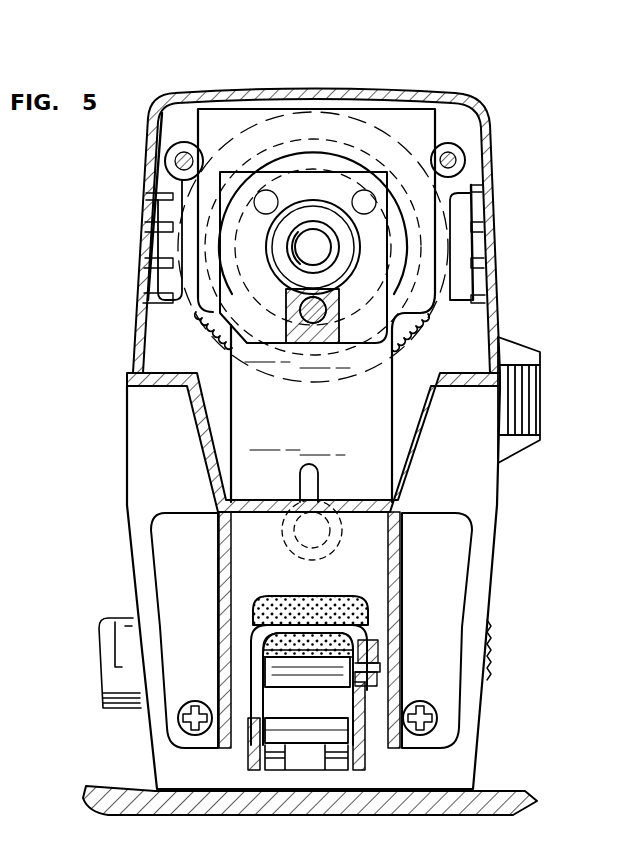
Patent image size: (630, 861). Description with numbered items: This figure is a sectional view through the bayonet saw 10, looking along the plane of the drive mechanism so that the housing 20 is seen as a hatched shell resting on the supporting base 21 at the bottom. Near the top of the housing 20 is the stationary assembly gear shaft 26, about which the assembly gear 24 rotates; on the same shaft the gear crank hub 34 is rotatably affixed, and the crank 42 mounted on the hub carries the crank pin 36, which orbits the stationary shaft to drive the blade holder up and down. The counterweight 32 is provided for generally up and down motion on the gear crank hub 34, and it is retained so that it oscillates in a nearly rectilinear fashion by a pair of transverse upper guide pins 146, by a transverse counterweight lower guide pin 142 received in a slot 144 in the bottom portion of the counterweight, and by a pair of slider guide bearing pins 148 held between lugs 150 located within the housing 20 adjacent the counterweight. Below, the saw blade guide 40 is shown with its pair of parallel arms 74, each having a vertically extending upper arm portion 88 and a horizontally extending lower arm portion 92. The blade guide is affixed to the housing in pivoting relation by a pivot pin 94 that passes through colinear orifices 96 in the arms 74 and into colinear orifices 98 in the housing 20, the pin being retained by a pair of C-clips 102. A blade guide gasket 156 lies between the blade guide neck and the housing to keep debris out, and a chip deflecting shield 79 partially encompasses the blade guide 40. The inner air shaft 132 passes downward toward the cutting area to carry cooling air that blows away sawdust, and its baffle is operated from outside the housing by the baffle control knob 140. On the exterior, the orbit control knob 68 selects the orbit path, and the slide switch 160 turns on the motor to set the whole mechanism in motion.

The bayonet saw 10 is at (122, 172).
The housing 20 is at (124, 412).
The supporting base 21 is at (525, 791).
The assembly gear 24 is at (422, 326).
The assembly gear shaft 26 is at (313, 247).
The counterweight 32 is at (383, 117).
The gear crank hub 34 is at (312, 164).
The crank pin 36 is at (300, 312).
The saw blade guide 40 is at (167, 746).
The crank 42 is at (330, 178).
The orbit control knob 68 is at (494, 656).
The parallel arms 74 is at (248, 640).
The chip deflecting shield 79 is at (219, 587).
The upper arm portion 88 is at (254, 653).
The lower arm portion 92 is at (247, 758).
The pivot pin 94 is at (310, 677).
The colinear orifices 96 is at (384, 668).
The colinear orifices 98 is at (384, 680).
The C-clips 102 is at (308, 646).
The inner air shaft 132 is at (280, 760).
The baffle control knob 140 is at (112, 663).
The counterweight lower guide pin 142 is at (310, 544).
The slot 144 is at (313, 470).
The upper guide pins 146 is at (180, 158).
The slider guide bearing pins 148 is at (149, 248).
The lugs 150 is at (146, 227).
The blade guide gasket 156 is at (344, 612).
The slide switch 160 is at (522, 391).